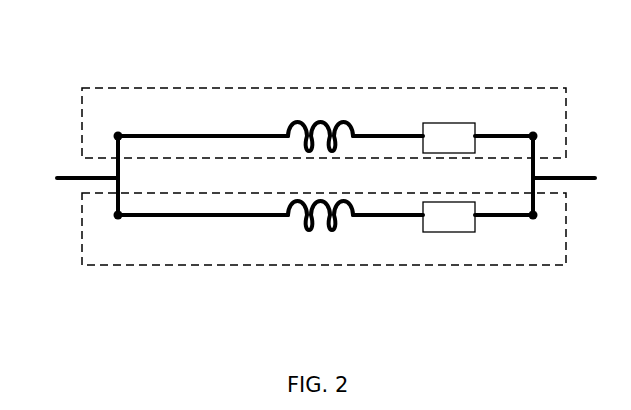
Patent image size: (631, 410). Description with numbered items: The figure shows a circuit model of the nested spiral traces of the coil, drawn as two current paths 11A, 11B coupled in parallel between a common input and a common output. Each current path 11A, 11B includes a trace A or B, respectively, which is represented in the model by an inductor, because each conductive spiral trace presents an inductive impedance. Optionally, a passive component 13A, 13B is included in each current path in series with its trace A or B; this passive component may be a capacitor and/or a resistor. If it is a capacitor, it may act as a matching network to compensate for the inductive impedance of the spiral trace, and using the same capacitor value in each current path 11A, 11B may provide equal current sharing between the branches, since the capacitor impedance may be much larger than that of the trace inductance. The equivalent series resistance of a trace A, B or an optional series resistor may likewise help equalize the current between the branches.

The current path 11A is at (101, 87).
The current path 11B is at (102, 266).
The passive component 13A is at (449, 138).
The passive component 13B is at (449, 217).
The trace A is at (290, 128).
The trace B is at (310, 229).